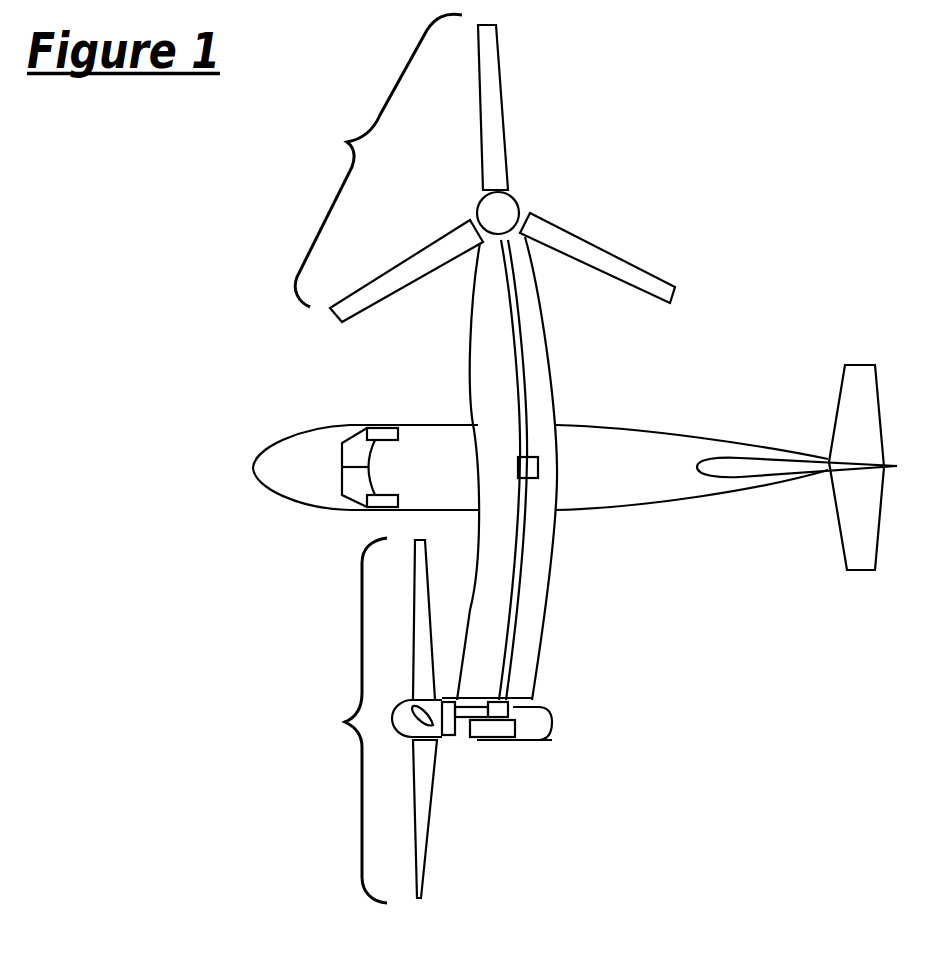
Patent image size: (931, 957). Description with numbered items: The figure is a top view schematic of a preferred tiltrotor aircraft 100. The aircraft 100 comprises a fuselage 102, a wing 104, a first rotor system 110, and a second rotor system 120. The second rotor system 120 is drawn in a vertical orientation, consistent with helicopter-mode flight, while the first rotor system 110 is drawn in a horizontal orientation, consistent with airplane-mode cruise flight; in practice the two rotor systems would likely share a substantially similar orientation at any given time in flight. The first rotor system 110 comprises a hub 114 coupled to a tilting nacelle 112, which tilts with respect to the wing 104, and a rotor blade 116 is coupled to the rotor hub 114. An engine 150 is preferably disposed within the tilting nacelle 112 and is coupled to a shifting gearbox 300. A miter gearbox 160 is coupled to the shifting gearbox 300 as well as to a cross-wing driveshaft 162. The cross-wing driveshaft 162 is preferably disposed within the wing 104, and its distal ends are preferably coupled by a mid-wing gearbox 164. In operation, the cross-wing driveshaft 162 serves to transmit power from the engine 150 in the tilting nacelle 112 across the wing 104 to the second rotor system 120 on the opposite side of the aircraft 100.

The tiltrotor aircraft 100 is at (190, 477).
The fuselage 102 is at (297, 437).
The wing 104 is at (553, 376).
The first rotor system 110 is at (345, 722).
The tilting nacelle 112 is at (538, 740).
The hub 114 is at (397, 730).
The rotor blade 116 is at (427, 882).
The second rotor system 120 is at (347, 142).
The engine 150 is at (503, 750).
The miter gearbox 160 is at (520, 702).
The cross-wing driveshaft 162 is at (520, 578).
The mid-wing gearbox 164 is at (538, 478).
The shifting gearbox 300 is at (447, 740).